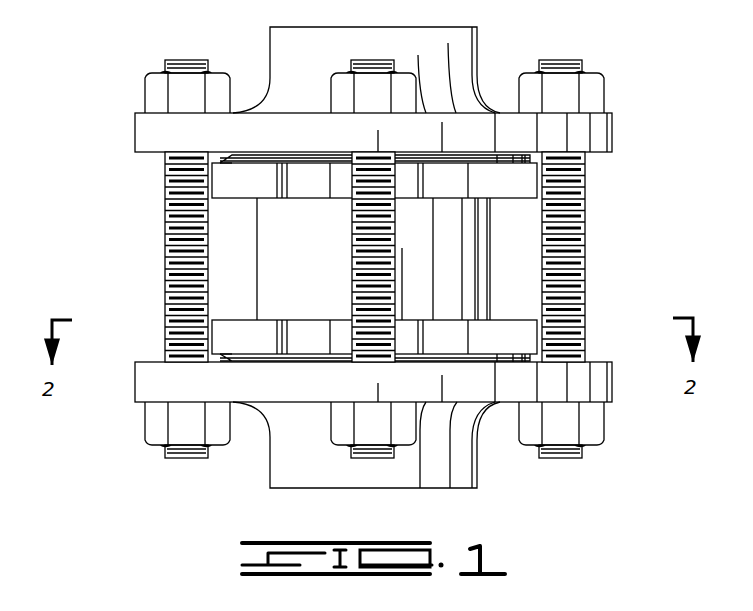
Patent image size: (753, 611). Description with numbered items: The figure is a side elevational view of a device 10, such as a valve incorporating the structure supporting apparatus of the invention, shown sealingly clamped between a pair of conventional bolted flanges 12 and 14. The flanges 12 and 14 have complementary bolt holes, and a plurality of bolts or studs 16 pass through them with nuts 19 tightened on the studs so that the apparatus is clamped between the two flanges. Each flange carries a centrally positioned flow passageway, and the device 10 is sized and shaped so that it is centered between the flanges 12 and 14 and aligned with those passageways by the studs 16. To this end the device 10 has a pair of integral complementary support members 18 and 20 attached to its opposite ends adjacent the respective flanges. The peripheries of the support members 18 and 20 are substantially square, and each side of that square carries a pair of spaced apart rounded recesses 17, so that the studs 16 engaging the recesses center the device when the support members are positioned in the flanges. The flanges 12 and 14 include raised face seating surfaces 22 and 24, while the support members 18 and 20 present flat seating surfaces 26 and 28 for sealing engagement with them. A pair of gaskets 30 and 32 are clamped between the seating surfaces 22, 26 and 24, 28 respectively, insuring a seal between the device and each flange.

The device 10 is at (500, 245).
The bolted flange 12 is at (595, 130).
The bolted flange 14 is at (575, 386).
The studs 16 is at (186, 238).
The rounded recesses 17 is at (299, 186).
The support member 18 is at (525, 181).
The nuts 19 is at (153, 88).
The support member 20 is at (528, 335).
The raised face seating surface 22 is at (478, 155).
The raised face seating surface 24 is at (260, 362).
The flat seating surface 26 is at (258, 152).
The flat seating surface 28 is at (252, 356).
The gasket 30 is at (262, 113).
The gasket 32 is at (300, 356).